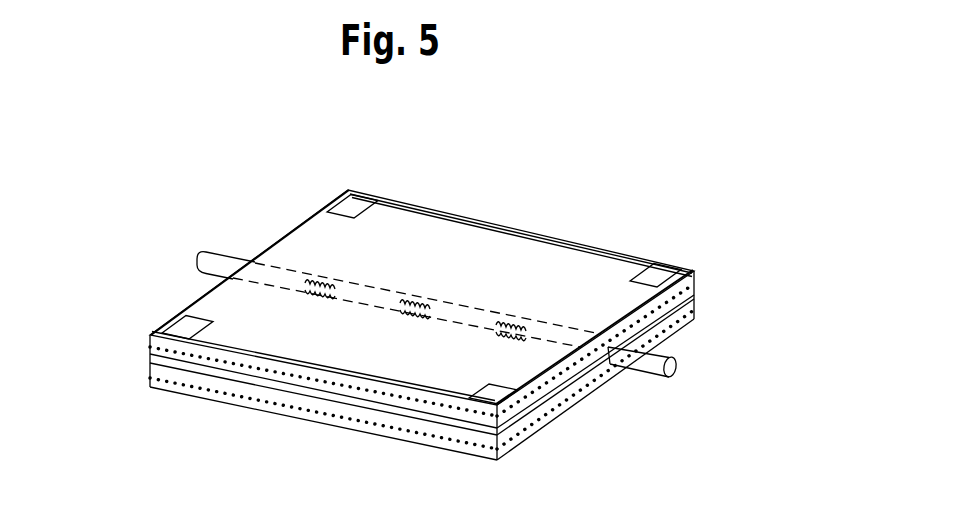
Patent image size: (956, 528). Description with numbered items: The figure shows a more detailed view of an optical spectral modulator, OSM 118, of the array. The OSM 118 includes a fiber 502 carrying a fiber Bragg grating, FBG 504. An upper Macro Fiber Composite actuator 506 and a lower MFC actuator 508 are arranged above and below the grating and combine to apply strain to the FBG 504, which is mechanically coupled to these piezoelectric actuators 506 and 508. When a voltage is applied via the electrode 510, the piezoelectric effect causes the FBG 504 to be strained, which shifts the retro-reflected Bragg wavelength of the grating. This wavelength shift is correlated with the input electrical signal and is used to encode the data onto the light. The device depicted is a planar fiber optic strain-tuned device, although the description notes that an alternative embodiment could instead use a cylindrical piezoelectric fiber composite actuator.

The optical spectral modulator 118 is at (146, 241).
The fiber 502 is at (648, 394).
The FBG 504 is at (492, 361).
The upper Macro Fiber Composite actuator 506 is at (714, 267).
The lower MFC actuator 508 is at (717, 308).
The electrode 510 is at (476, 219).